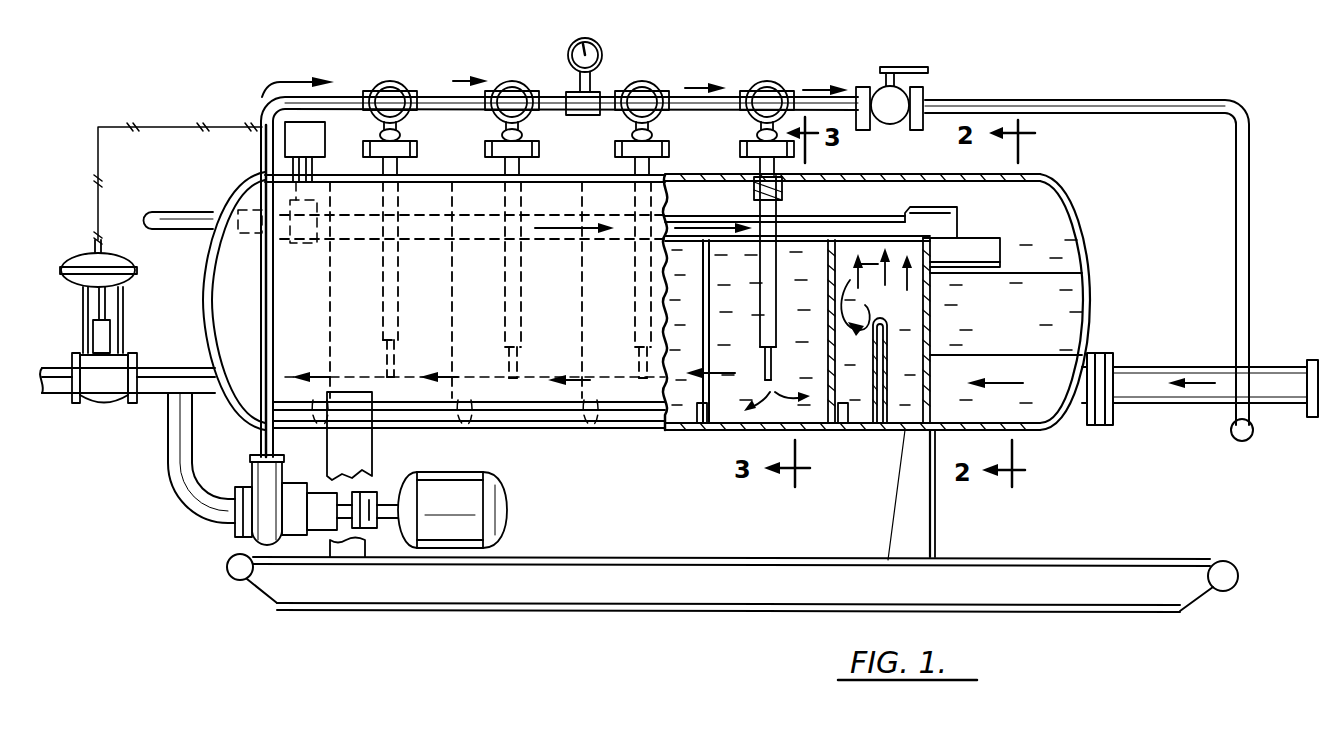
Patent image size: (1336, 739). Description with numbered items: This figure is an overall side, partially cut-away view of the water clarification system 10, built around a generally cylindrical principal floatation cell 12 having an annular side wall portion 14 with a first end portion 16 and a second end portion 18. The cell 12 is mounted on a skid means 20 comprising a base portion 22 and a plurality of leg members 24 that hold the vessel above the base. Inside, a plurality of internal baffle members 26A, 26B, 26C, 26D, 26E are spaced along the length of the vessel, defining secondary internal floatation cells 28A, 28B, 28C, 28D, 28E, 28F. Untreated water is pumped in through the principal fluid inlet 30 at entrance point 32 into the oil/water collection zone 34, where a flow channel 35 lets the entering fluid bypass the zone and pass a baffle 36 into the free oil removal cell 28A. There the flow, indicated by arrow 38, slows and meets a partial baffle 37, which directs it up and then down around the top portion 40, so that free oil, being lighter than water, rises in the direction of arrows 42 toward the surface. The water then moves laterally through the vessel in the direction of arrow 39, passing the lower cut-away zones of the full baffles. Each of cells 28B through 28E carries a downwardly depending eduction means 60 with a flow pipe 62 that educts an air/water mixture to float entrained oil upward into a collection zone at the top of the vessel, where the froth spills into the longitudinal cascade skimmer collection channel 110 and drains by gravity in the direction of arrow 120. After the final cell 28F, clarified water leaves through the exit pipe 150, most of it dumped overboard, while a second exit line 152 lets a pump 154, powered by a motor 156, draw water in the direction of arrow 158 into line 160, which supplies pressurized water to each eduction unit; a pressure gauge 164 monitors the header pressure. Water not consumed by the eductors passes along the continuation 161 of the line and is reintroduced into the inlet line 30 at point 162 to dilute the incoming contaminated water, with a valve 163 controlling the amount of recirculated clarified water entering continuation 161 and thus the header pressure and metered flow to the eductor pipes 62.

The system 10 is at (728, 48).
The principal floatation cell 12 is at (248, 174).
The annular side wall portion 14 is at (618, 428).
The first end portion 16 is at (1090, 297).
The second end portion 18 is at (215, 272).
The skid means 20 is at (1105, 548).
The base portion 22 is at (540, 588).
The leg members 24 is at (373, 440).
The internal baffle member 26A is at (840, 435).
The internal baffle member 26B is at (700, 425).
The internal baffle member 26C is at (590, 432).
The internal baffle member 26D is at (459, 437).
The internal baffle member 26E is at (320, 437).
The free oil removal cell 28A is at (894, 307).
The secondary internal floatation cell 28B is at (818, 302).
The secondary internal floatation cell 28C is at (566, 279).
The secondary internal floatation cell 28D is at (498, 279).
The secondary internal floatation cell 28E is at (378, 279).
The secondary internal floatation cell 28F is at (320, 279).
The principal fluid inlet 30 is at (1135, 388).
The entrance point 32 is at (1040, 393).
The oil/water collection zone 34 is at (1024, 337).
The flow channel 35 is at (1040, 368).
The baffle 36 is at (930, 293).
The partial baffle 37 is at (900, 472).
The arrow 38 is at (882, 325).
The arrow 39 is at (727, 373).
The top portion of partial baffle 40 is at (892, 345).
The arrows 42 is at (815, 400).
The eduction means 60 is at (612, 163).
The flow pipe 62 is at (760, 199).
The collection channel 110 is at (480, 228).
The arrow 120 is at (560, 225).
The exit pipe 150 is at (165, 392).
The second exit line 152 is at (170, 440).
The pump 154 is at (248, 512).
The motor 156 is at (470, 503).
The arrow 158 is at (224, 490).
The line 160 is at (345, 97).
The continuation of line 161 is at (1062, 100).
The point 162 is at (1233, 412).
The valve 163 is at (912, 60).
The pressure gauge 164 is at (600, 35).